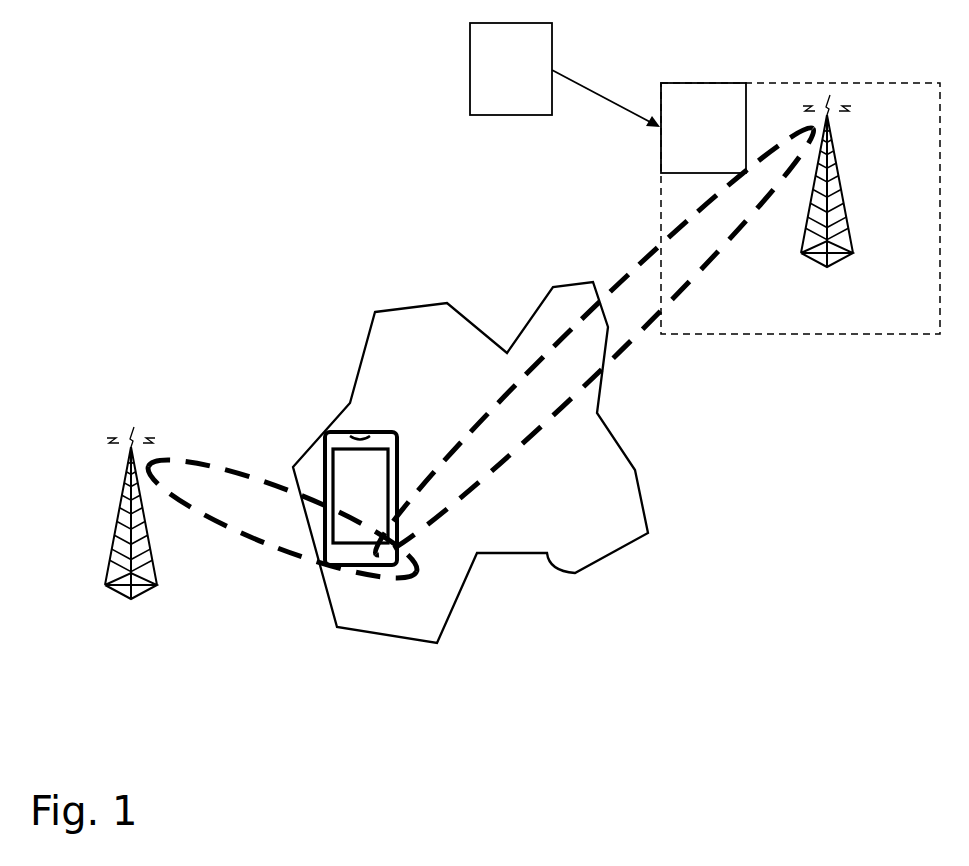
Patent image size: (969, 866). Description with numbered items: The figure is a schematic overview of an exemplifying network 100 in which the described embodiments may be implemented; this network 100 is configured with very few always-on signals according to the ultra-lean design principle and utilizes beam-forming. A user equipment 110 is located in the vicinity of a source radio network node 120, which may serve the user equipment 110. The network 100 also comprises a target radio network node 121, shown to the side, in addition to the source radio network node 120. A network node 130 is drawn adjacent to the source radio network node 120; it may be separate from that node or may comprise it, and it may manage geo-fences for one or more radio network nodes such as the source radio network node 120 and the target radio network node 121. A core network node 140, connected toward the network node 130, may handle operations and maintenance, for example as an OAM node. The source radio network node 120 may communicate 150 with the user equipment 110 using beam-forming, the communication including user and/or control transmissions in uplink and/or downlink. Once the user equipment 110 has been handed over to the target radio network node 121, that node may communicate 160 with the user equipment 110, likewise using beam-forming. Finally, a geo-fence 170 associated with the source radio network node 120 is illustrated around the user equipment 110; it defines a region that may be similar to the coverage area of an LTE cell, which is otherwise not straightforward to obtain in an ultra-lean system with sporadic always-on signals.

The network 100 is at (370, 162).
The user equipment 110 is at (361, 498).
The source radio network node 120 is at (833, 206).
The target radio network node 121 is at (137, 536).
The network node 130 is at (703, 128).
The core network node 140 is at (511, 69).
The communication 150 is at (621, 287).
The communication 160 is at (232, 470).
The geo-fence 170 is at (363, 357).